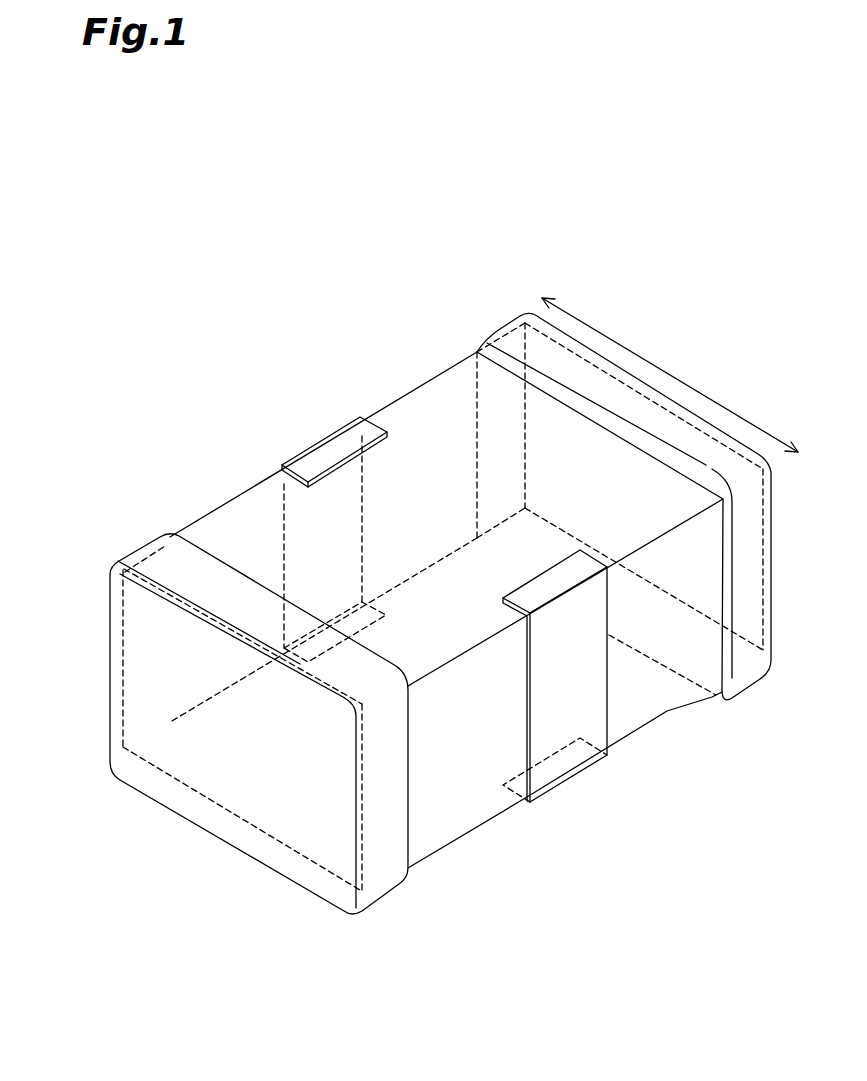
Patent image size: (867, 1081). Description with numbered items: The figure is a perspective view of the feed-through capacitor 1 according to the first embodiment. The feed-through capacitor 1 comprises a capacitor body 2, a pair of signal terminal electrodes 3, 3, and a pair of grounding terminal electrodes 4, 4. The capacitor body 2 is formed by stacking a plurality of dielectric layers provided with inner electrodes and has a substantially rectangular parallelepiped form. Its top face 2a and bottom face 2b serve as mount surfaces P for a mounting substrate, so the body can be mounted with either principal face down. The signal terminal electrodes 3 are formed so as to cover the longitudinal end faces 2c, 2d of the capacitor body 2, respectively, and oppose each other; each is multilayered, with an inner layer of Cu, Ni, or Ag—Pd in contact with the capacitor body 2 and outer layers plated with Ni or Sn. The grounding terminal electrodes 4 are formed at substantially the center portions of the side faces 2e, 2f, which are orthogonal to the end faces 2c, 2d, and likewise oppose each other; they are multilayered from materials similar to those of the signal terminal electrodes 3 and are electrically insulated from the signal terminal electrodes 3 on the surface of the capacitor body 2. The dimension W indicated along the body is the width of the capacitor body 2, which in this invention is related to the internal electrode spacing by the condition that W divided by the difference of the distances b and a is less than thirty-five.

The feed-through capacitor 1 is at (247, 340).
The capacitor body 2 is at (239, 488).
The top face 2a is at (232, 532).
The bottom face 2b is at (628, 703).
The end face 2c is at (240, 773).
The end face 2d is at (640, 488).
The side face 2e is at (430, 421).
The side face 2f is at (460, 767).
The signal terminal electrode 3 is at (514, 326).
The grounding terminal electrode 4 is at (329, 447).
The width W is at (670, 375).